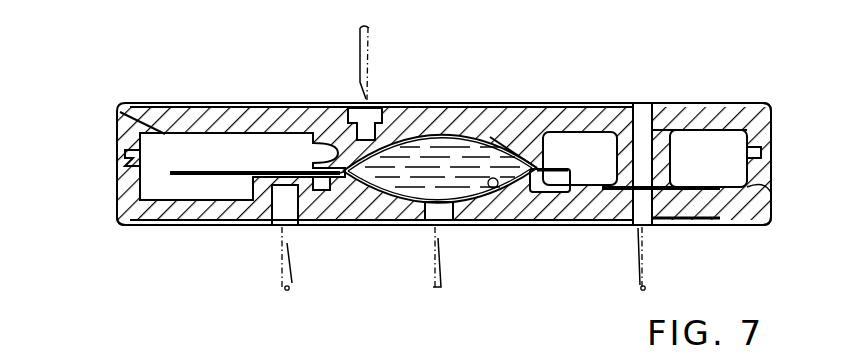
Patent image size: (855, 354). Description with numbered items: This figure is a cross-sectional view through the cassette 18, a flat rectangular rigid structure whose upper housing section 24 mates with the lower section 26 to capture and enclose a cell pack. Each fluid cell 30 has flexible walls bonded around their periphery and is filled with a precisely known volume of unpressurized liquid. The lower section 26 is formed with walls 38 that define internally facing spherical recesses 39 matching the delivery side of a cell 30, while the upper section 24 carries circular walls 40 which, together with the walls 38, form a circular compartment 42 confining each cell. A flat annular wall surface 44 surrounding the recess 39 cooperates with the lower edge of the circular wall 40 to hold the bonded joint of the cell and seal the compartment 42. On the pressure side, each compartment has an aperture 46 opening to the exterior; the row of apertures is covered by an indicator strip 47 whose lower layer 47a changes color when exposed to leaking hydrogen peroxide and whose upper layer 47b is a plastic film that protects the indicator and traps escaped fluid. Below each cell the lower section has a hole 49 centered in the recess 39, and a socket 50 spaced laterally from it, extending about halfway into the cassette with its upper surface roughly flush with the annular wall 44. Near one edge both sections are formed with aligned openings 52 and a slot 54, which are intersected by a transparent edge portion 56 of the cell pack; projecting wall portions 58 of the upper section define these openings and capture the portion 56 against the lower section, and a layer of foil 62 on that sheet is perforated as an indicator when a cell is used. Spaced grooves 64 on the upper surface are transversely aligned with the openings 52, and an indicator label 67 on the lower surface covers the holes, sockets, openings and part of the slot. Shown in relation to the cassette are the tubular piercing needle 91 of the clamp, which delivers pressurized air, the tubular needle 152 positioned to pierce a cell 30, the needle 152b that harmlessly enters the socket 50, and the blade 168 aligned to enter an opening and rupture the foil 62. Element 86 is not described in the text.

The cassette 18 is at (183, 68).
The upper housing section 24 is at (125, 122).
The lower section 26 is at (132, 222).
The fluid cell 30 is at (505, 140).
The wall 38 is at (352, 190).
The spherical recess 39 is at (500, 220).
The circular wall 40 is at (338, 152).
The circular compartment 42 is at (467, 137).
The flat annular wall surface 44 is at (343, 173).
The aperture 46 is at (360, 110).
The indicator strip 47 is at (273, 105).
The lower layer 47a is at (192, 112).
The upper layer 47b is at (180, 106).
The hole 49 is at (433, 227).
The socket 50 is at (280, 212).
The opening 52 is at (650, 173).
The slot 54 is at (640, 103).
The transparent edge portion 56 is at (768, 193).
The projecting wall portion 58 is at (667, 160).
The foil layer 62 is at (616, 184).
The groove 64 is at (740, 100).
The indicator strip or label 67 is at (190, 228).
The connector 86 is at (191, 346).
The tubular piercing needle 91 is at (372, 66).
The tubular needle 152 is at (443, 270).
The needle 152b is at (293, 273).
The blade 168 is at (647, 277).